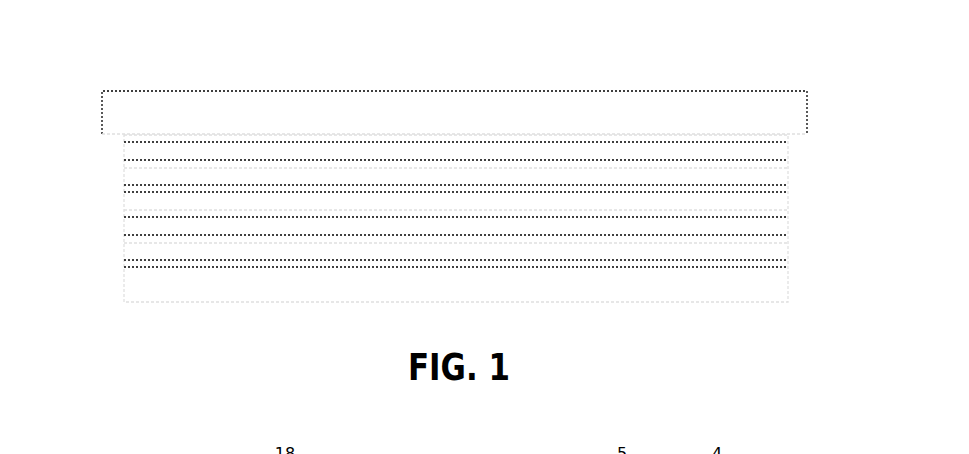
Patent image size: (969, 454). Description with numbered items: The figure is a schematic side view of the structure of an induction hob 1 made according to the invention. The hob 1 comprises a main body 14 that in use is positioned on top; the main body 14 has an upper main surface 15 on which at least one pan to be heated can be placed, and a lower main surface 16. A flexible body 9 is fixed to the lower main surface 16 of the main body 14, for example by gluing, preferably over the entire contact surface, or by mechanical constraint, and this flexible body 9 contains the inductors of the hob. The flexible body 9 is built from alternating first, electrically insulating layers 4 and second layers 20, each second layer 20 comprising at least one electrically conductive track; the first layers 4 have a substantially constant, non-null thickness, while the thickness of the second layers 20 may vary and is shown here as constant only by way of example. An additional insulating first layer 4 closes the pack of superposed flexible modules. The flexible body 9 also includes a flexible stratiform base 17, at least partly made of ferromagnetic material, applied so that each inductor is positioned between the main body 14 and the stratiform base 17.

The induction hob 1 is at (153, 333).
The flexible body 9 is at (110, 235).
The main body 14 is at (325, 113).
The upper main surface 15 is at (538, 88).
The lower main surface 16 is at (312, 140).
The stratiform base 17 is at (260, 285).
The first layer 4 is at (738, 138).
The second layer 20 is at (543, 252).